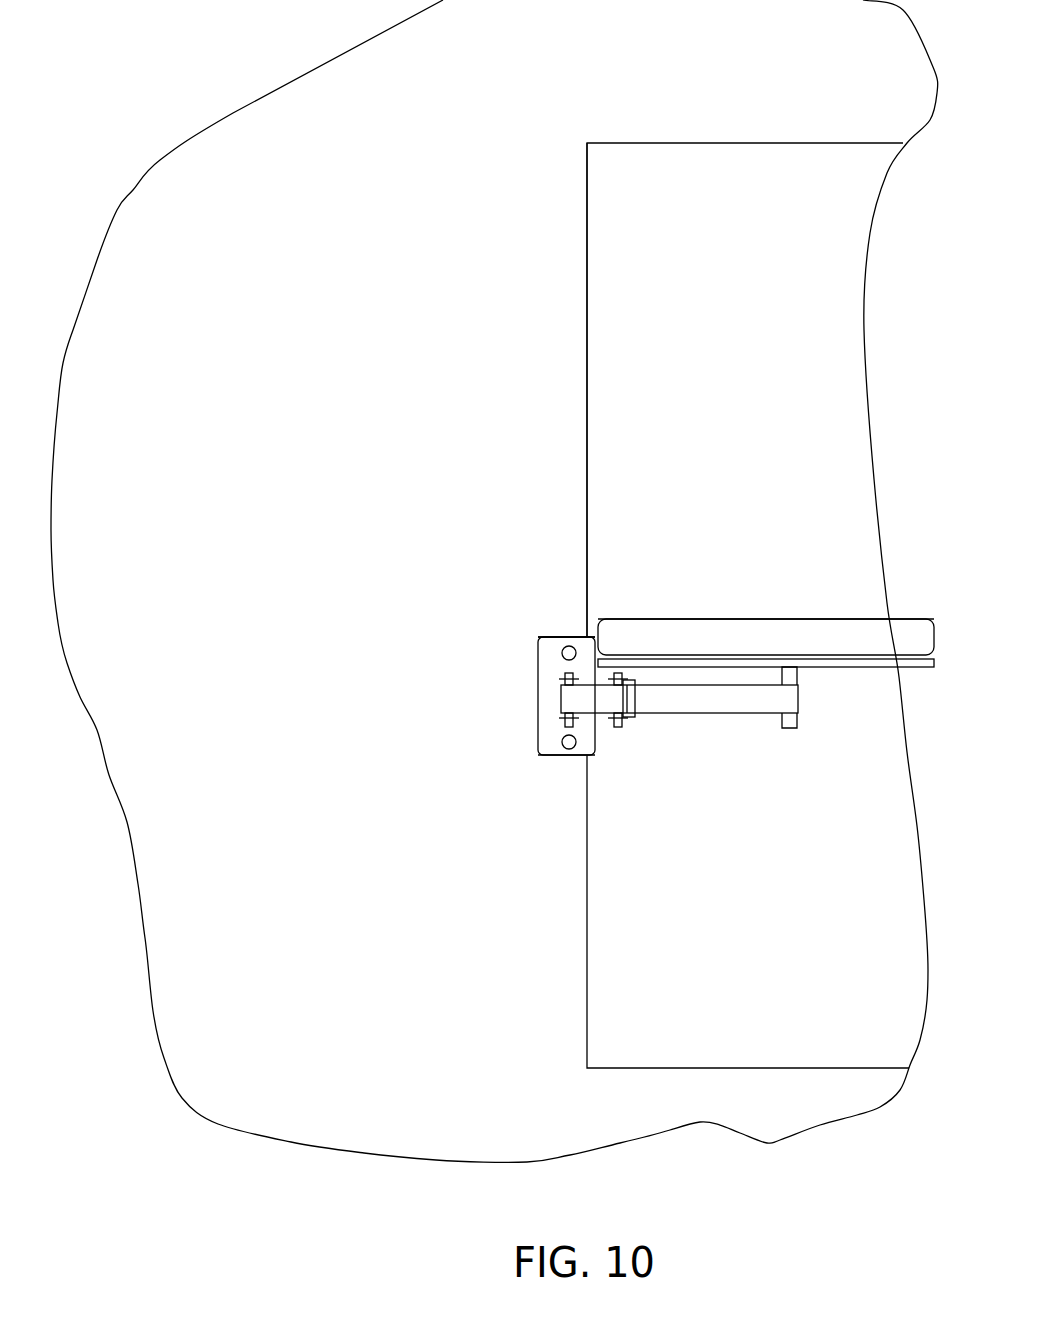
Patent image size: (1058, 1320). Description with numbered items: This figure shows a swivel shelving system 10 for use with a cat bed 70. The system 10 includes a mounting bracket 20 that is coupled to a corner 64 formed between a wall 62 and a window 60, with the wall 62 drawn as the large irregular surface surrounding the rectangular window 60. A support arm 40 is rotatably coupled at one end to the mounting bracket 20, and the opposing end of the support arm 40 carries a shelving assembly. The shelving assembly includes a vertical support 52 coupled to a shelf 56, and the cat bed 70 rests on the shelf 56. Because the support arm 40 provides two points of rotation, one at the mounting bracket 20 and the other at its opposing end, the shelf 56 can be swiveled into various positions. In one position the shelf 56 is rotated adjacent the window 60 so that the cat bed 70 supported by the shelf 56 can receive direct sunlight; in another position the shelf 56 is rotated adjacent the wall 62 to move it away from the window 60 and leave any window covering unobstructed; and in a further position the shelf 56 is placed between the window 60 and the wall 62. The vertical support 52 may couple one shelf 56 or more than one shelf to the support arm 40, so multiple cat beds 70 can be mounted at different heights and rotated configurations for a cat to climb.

The swivel shelving system 10 is at (640, 500).
The mounting bracket 20 is at (505, 657).
The support arm 40 is at (580, 698).
The vertical support 52 is at (787, 727).
The shelf 56 is at (925, 662).
The window 60 is at (787, 273).
The wall 62 is at (330, 115).
The corner 64 is at (587, 337).
The cat bed 70 is at (803, 633).